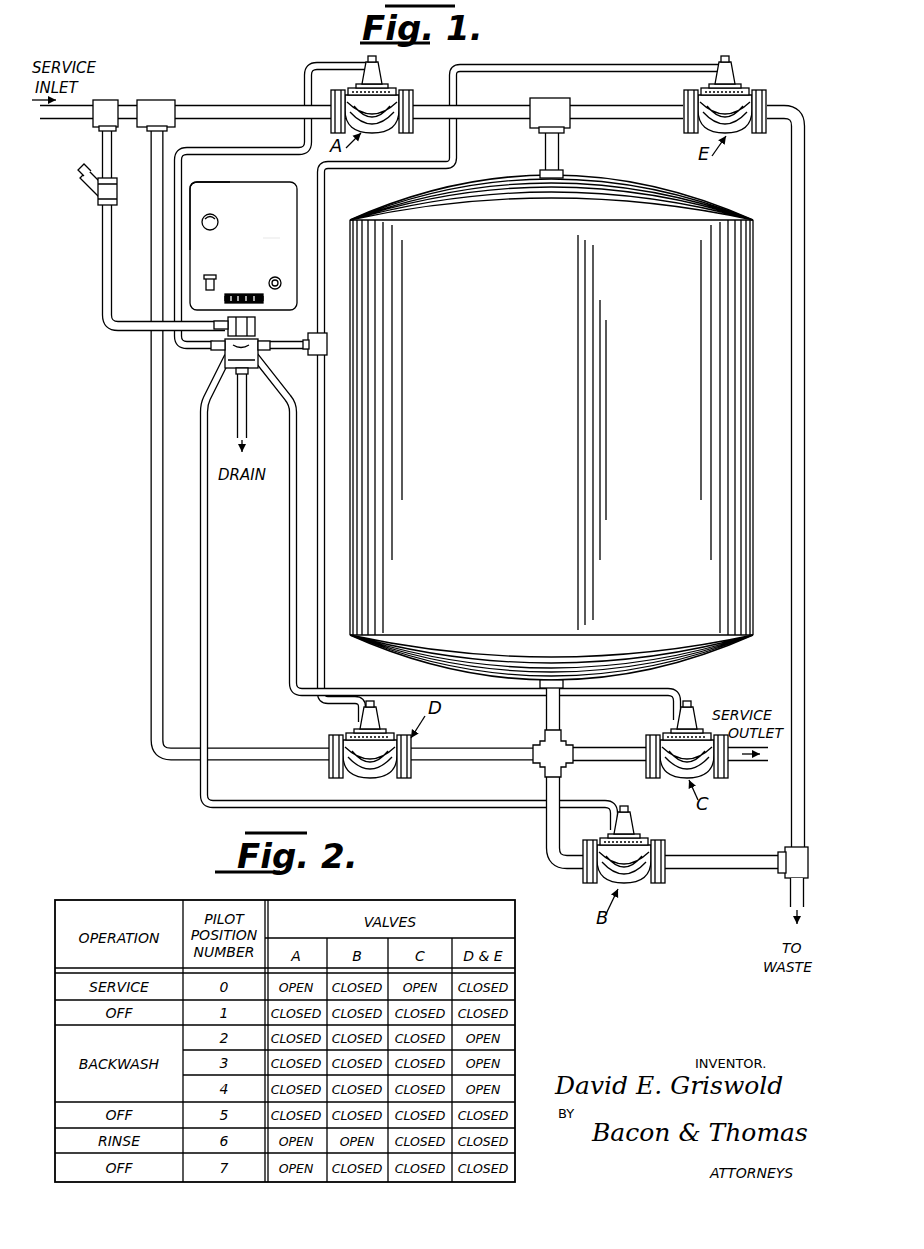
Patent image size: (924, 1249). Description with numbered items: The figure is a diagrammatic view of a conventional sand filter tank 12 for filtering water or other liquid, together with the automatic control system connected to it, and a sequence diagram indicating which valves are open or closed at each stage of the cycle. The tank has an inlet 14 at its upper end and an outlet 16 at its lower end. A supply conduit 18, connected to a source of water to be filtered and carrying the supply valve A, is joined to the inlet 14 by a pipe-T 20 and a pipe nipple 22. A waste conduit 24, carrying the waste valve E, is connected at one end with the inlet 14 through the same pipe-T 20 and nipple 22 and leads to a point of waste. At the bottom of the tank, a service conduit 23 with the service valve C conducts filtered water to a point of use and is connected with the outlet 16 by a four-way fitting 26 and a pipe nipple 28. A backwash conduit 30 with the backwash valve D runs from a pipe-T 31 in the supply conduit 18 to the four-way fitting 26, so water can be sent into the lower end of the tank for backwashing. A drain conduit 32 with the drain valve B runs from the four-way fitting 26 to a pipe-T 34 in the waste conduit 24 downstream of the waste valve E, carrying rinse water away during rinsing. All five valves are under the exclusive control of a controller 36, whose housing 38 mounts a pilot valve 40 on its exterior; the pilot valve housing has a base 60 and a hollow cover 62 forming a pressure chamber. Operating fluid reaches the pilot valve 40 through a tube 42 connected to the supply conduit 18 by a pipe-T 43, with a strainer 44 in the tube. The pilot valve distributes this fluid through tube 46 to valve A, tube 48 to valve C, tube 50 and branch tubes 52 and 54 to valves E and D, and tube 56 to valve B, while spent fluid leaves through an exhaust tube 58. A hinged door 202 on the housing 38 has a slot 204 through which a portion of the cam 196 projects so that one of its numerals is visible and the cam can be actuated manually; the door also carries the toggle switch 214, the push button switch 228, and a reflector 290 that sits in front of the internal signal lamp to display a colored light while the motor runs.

The sand filter tank 12 is at (598, 322).
The inlet 14 is at (567, 171).
The outlet 16 is at (562, 681).
The supply conduit 18 is at (253, 105).
The pipe-T 20 is at (557, 99).
The pipe nipple 22 is at (562, 148).
The service conduit 23 is at (588, 746).
The waste conduit 24 is at (790, 656).
The four-way fitting 26 is at (535, 771).
The pipe nipple 28 is at (546, 708).
The backwash conduit 30 is at (151, 540).
The pipe-T 31 is at (161, 100).
The drain conduit 32 is at (547, 834).
The pipe-T 34 is at (786, 873).
The controller 36 is at (268, 182).
The housing 38 is at (281, 238).
The pilot valve 40 is at (297, 323).
The tube 42 is at (104, 265).
The pipe-T 43 is at (109, 101).
The strainer 44 is at (114, 178).
The tube 46 is at (251, 150).
The tube 48 is at (286, 394).
The tube 50 is at (292, 348).
The branch tube 52 is at (326, 212).
The branch tube 54 is at (326, 491).
The tube 56 is at (208, 605).
The exhaust tube 58 is at (247, 433).
The base 60 is at (222, 354).
The cover 62 is at (225, 300).
The cam 196 is at (237, 293).
The door 202 is at (222, 184).
The slot 204 is at (263, 299).
The toggle switch 214 is at (214, 275).
The push button switch 228 is at (275, 277).
The reflector 290 is at (219, 222).